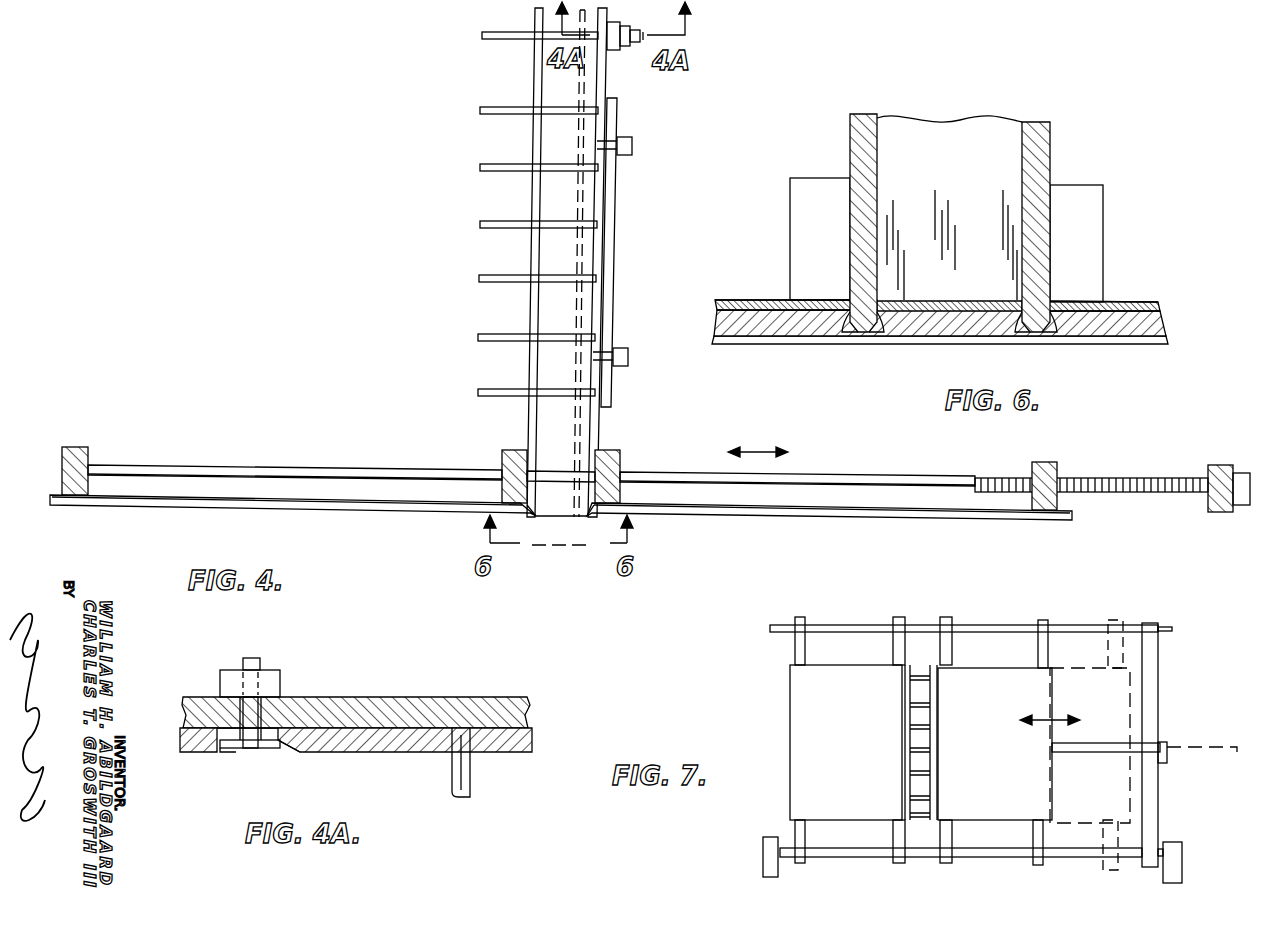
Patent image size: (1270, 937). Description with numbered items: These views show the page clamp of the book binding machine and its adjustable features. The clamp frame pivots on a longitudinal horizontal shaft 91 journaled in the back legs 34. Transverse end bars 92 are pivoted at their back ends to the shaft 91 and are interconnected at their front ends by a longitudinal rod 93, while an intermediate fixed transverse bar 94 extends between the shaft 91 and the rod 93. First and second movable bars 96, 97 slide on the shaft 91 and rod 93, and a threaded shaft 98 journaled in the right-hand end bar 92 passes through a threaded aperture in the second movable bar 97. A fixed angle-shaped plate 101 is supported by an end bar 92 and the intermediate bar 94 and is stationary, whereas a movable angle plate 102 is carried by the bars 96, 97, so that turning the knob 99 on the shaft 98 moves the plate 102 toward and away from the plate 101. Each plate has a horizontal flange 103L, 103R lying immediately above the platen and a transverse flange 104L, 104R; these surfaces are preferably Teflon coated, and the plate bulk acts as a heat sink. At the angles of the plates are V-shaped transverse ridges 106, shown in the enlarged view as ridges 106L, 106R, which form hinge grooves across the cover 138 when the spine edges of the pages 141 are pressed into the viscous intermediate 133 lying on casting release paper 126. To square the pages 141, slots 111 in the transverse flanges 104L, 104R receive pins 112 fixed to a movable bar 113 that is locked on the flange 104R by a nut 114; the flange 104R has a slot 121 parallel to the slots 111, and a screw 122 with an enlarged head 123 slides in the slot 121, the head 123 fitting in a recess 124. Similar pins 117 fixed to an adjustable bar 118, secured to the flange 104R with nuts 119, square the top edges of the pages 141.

In FIG. 7, the back legs 34 is at (768, 865).
In FIG. 7, the longitudinal horizontal shaft 91 is at (840, 852).
In FIG. 4, the transverse end bars 92 is at (80, 447).
In FIG. 7, the transverse end bars 92 is at (802, 657).
In FIG. 4, the longitudinal rod 93 is at (138, 465).
In FIG. 7, the longitudinal rod 93 is at (990, 625).
In FIG. 4, the intermediate fixed transverse bar 94 is at (506, 450).
In FIG. 6, the intermediate fixed transverse bar 94 is at (815, 235).
In FIG. 7, the intermediate fixed transverse bar 94 is at (893, 650).
In FIG. 4, the first movable bar 96 is at (615, 450).
In FIG. 6, the first movable bar 96 is at (1082, 255).
In FIG. 7, the first movable bar 96 is at (952, 655).
In FIG. 4, the second movable bar 97 is at (1048, 462).
In FIG. 7, the second movable bar 97 is at (1048, 658).
In FIG. 4, the threaded shaft 98 is at (1095, 478).
In FIG. 7, the threaded shaft 98 is at (1090, 755).
In FIG. 4, the knob 99 is at (1243, 506).
In FIG. 7, the knob 99 is at (1164, 745).
In FIG. 4, the fixed angle-shaped plate 101 is at (298, 505).
In FIG. 6, the fixed angle-shaped plate 101 is at (776, 300).
In FIG. 7, the fixed angle-shaped plate 101 is at (870, 776).
In FIG. 4, the movable angle plate 102 is at (686, 516).
In FIG. 6, the movable angle plate 102 is at (1080, 300).
In FIG. 7, the movable angle plate 102 is at (1010, 776).
In FIG. 4, the flange 103L is at (396, 510).
In FIG. 6, the flange 103L is at (800, 300).
In FIG. 4, the flange 103R is at (770, 512).
In FIG. 6, the flange 103R is at (1135, 305).
In FIG. 4, the transverse flange 104L is at (531, 308).
In FIG. 6, the transverse flange 104L is at (842, 223).
In FIG. 4, the transverse flange 104R is at (601, 296).
In FIG. 6, the transverse flange 104R is at (1050, 222).
In FIG. 4A, the transverse flange 104R is at (542, 740).
In FIG. 4, the transverse ridges 106 is at (530, 515).
In FIG. 6, the transverse ridge 106L is at (876, 335).
In FIG. 6, the transverse ridge 106R is at (1028, 335).
In FIG. 4A, the slots 111 is at (470, 768).
In FIG. 4, the pins 112 is at (496, 25).
In FIG. 4A, the pins 112 is at (452, 770).
In FIG. 7, the pins 112 is at (912, 700).
In FIG. 4, the movable bar 113 is at (610, 48).
In FIG. 4A, the movable bar 113 is at (358, 697).
In FIG. 4, the nut 114 is at (630, 43).
In FIG. 4A, the nut 114 is at (270, 680).
In FIG. 4, the pins 117 is at (500, 392).
In FIG. 7, the pins 117 is at (912, 808).
In FIG. 4, the adjustable bar 118 is at (612, 230).
In FIG. 4, the nuts 119 is at (632, 148).
In FIG. 4A, the slot 121 is at (300, 748).
In FIG. 4A, the screw 122 is at (243, 705).
In FIG. 4A, the enlarged head 123 is at (255, 750).
In FIG. 4A, the recess 124 is at (222, 752).
In FIG. 6, the casting release paper 126 is at (1118, 345).
In FIG. 6, the intermediate 133 is at (922, 340).
In FIG. 6, the cover 138 is at (1165, 328).
In FIG. 6, the pages 141 is at (980, 135).